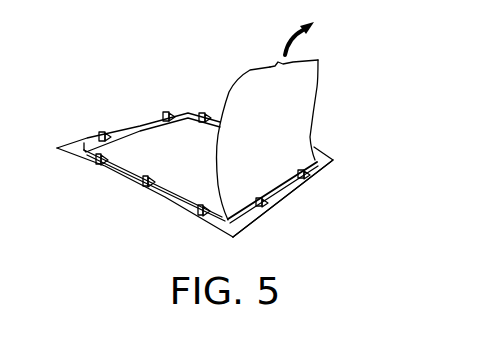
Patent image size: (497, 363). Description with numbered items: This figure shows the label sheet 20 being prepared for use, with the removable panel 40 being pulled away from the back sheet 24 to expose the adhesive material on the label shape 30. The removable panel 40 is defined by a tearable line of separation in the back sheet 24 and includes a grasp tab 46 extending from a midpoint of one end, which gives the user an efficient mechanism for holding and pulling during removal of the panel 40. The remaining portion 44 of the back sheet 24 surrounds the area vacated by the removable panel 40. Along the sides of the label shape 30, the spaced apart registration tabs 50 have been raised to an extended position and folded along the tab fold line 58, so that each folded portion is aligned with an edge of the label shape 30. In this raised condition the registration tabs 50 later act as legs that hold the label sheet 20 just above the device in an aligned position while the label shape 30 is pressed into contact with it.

The label sheet 20 is at (169, 219).
The back sheet 24 is at (283, 193).
The label shape 30 is at (148, 124).
The removable panel 40 is at (298, 127).
The remaining portion 44 is at (251, 223).
The grasp tab 46 is at (277, 62).
The registration tabs 50 is at (103, 133).
The tab fold line 58 is at (170, 116).